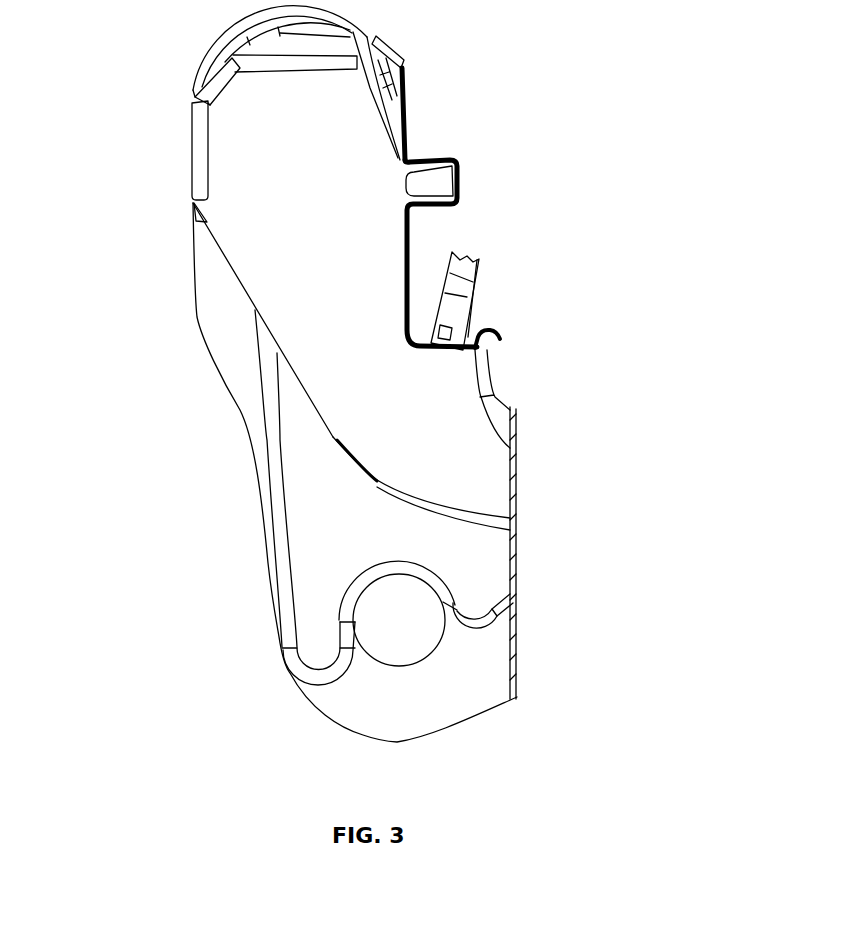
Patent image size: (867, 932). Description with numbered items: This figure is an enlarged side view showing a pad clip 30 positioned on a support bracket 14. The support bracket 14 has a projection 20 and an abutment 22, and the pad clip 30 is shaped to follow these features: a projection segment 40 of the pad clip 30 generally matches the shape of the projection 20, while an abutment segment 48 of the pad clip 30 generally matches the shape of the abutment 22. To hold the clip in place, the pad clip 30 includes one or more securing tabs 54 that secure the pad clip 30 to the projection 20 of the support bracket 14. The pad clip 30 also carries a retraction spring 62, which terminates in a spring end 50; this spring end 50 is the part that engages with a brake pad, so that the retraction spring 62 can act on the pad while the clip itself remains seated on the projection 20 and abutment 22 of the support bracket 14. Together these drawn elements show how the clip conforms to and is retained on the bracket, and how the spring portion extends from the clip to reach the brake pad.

The support bracket 14 is at (367, 412).
The projection 20 is at (402, 177).
The abutment 22 is at (393, 270).
The pad clip 30 is at (418, 82).
The projection segment 40 is at (460, 158).
The abutment segment 48 is at (418, 233).
The spring end 50 is at (480, 328).
The securing tab 54 is at (440, 184).
The retraction spring 62 is at (427, 320).